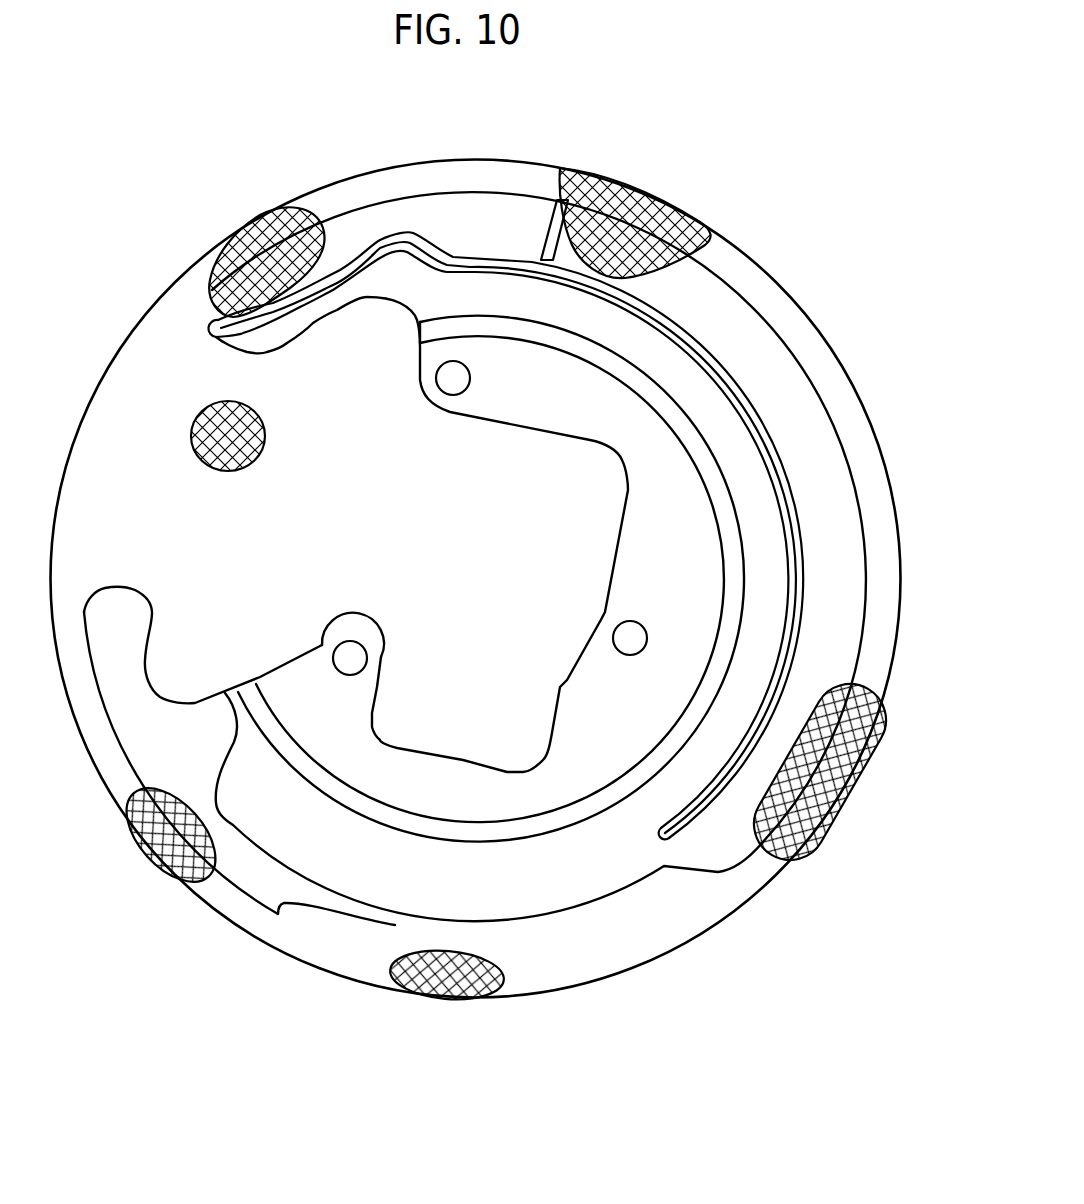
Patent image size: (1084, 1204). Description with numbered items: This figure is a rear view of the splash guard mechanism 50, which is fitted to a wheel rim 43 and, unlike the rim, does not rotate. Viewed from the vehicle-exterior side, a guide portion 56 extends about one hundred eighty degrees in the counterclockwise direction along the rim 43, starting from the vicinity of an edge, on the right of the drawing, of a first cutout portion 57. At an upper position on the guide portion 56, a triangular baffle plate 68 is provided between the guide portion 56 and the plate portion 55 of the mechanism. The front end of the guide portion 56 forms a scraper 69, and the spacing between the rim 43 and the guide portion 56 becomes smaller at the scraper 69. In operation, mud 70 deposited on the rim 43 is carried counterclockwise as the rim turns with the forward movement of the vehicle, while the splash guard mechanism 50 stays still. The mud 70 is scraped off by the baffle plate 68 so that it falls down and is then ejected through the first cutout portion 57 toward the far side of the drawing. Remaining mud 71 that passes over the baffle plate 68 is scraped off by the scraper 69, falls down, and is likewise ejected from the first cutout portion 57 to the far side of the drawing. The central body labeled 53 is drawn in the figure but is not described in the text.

The rim 43 is at (627, 963).
The splash guard mechanism 50 is at (763, 197).
The anchor plate 53 is at (317, 323).
The plate portion 55 is at (823, 480).
The guide portion 56 is at (753, 410).
The first cutout portion 57 is at (380, 924).
The baffle plate 68 is at (550, 252).
The scraper 69 is at (210, 330).
The mud 70 is at (793, 840).
The remaining mud 71 is at (266, 214).